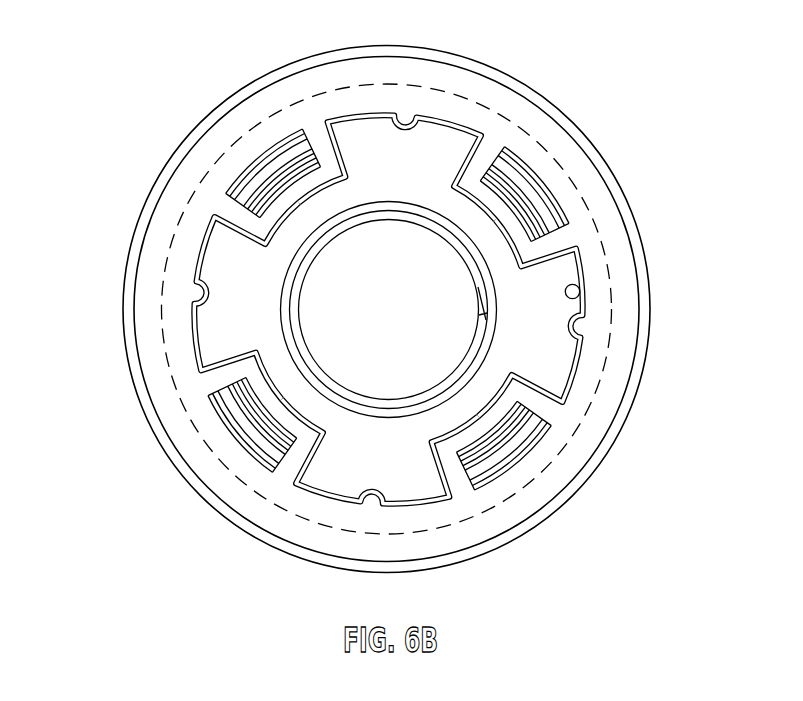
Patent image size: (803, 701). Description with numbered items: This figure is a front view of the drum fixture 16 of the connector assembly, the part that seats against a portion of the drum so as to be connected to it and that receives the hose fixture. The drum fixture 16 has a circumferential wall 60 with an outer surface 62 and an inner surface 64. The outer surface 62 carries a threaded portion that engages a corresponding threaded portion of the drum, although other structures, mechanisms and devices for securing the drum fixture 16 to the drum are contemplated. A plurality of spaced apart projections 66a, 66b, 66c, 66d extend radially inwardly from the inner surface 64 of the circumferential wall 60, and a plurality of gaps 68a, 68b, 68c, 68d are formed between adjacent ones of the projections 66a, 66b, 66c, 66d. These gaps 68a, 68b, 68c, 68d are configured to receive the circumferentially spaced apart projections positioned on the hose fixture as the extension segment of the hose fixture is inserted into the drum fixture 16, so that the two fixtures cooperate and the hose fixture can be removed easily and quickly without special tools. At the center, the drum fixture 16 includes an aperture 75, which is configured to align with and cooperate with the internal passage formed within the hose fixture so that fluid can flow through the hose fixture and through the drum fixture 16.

The drum fixture 16 is at (120, 27).
The circumferential wall 60 is at (600, 387).
The outer surface 62 is at (595, 220).
The inner surface 64 is at (590, 303).
The projection 66a is at (297, 190).
The projection 66b is at (497, 213).
The projection 66c is at (475, 428).
The projection 66d is at (272, 403).
The gap 68a is at (430, 150).
The gap 68b is at (552, 370).
The gap 68c is at (392, 478).
The gap 68d is at (222, 274).
The aperture 75 is at (364, 381).